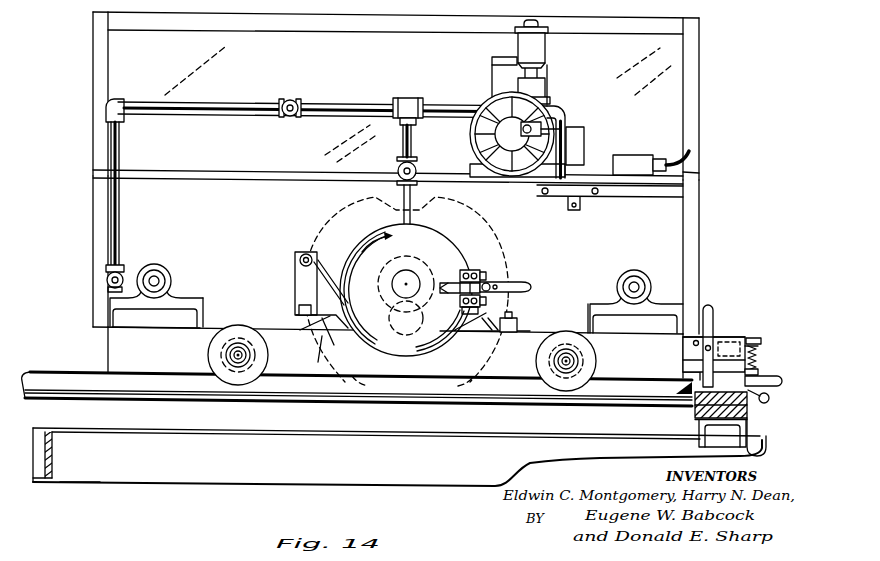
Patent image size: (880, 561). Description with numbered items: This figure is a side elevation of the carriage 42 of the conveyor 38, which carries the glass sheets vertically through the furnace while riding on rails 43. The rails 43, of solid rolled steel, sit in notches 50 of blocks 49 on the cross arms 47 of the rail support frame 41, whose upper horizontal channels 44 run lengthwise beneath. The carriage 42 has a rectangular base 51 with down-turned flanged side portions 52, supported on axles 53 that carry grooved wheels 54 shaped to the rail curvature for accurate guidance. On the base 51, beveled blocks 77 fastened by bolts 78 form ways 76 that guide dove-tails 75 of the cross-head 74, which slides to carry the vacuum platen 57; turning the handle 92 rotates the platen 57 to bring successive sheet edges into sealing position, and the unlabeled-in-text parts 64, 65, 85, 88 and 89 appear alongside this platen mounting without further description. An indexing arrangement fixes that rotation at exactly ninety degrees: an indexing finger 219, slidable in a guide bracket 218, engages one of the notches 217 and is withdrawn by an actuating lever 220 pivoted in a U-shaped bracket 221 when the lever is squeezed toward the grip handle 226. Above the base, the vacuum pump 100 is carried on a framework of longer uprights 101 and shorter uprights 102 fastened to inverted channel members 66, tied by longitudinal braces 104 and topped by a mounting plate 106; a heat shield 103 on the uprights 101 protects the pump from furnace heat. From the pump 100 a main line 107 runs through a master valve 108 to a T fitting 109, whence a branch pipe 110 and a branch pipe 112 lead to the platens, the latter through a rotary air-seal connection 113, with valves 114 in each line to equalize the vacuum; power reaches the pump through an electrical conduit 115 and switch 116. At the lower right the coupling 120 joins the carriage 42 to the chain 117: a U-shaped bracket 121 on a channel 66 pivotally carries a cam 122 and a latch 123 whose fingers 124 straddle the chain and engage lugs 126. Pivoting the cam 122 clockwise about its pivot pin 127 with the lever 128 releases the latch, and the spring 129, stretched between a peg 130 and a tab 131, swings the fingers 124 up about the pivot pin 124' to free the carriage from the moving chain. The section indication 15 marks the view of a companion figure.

The section line of FIG. 15 is at (375, 222).
The conveyor 38 is at (86, 25).
The rail support frame 41 is at (97, 461).
The carriage 42 is at (128, 348).
The rails 43 is at (95, 382).
The horizontal channels 44 is at (122, 467).
The cross arms 47 is at (756, 448).
The blocks 49 is at (749, 420).
The notches 50 is at (714, 428).
The base 51 is at (172, 330).
The flanged side portions 52 is at (192, 342).
The axles 53 is at (240, 368).
The grooved wheels 54 is at (225, 368).
The vacuum platen 57 is at (305, 222).
The shaft bearing 64 is at (156, 275).
The bearing pedestal 65 is at (175, 292).
The inverted channel members 66 is at (205, 312).
The cross-head 74 is at (336, 322).
The dove-tails 75 is at (318, 362).
The ways 76 is at (305, 328).
The beveled blocks 77 is at (300, 321).
The bolts 78 is at (296, 306).
The bracket 85 is at (296, 272).
The pivot 88 is at (297, 259).
The operating rod 89 is at (296, 289).
The handle 92 is at (370, 243).
The vacuum pump 100 is at (550, 76).
The uprights 101 is at (105, 82).
The uprights 102 is at (104, 250).
The heat shield 103 is at (654, 83).
The longitudinal braces 104 is at (640, 197).
The mounting plate 106 is at (692, 178).
The main line 107 is at (577, 143).
The master valve 108 is at (573, 212).
The T fitting 109 is at (409, 104).
The branch pipe 110 is at (333, 102).
The branch pipe 112 is at (413, 149).
The rotary air-seal connection 113 is at (428, 253).
The valves 114 is at (294, 99).
The electrical conduit 115 is at (694, 152).
The switch 116 is at (631, 164).
The chain 117 is at (684, 372).
The coupling 120 is at (726, 328).
The U-shaped bracket 121 is at (694, 343).
The cam 122 is at (724, 340).
The latch 123 is at (753, 343).
The latch fingers 124 is at (770, 391).
The pivot pin 124' is at (649, 404).
The lugs 126 is at (695, 409).
The pivot pin 127 is at (704, 348).
The lever 128 is at (710, 324).
The spring 129 is at (752, 354).
The peg 130 is at (750, 339).
The tab 131 is at (750, 368).
The notches 217 is at (440, 259).
The guide bracket 218 is at (480, 268).
The indexing finger 219 is at (452, 271).
The actuating lever 220 is at (508, 282).
The U-shaped bracket 221 is at (498, 291).
The grip handle 226 is at (488, 283).